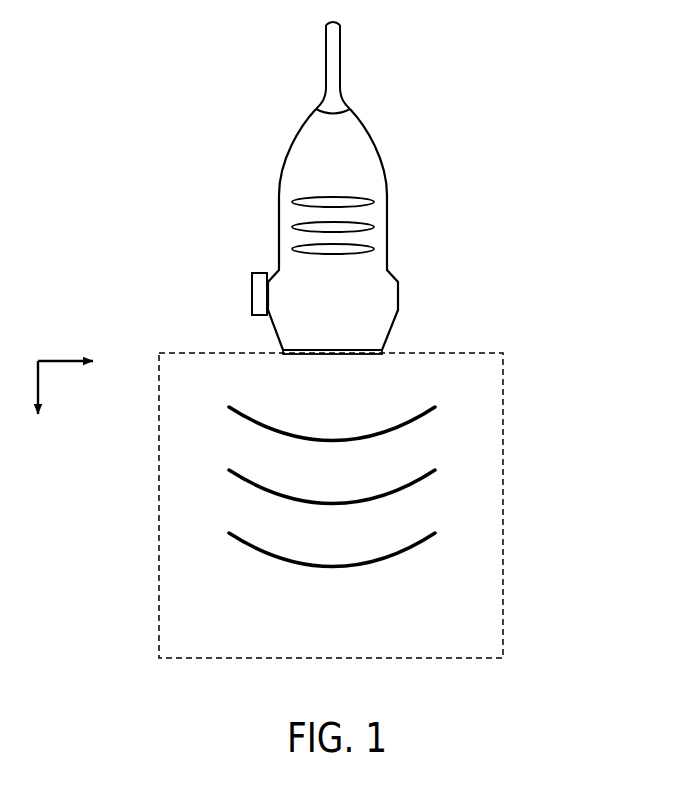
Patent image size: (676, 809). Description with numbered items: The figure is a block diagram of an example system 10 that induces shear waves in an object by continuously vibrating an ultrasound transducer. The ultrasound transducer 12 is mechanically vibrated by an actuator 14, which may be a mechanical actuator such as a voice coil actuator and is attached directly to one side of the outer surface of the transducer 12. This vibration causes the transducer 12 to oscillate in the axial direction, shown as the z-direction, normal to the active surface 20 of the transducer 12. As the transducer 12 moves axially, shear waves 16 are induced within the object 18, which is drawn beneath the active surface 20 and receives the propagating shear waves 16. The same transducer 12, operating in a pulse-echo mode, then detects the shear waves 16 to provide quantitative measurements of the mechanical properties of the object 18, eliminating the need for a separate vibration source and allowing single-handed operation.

The system 10 is at (178, 95).
The transducer 12 is at (393, 197).
The actuator 14 is at (247, 292).
The shear waves 16 is at (439, 412).
The object 18 is at (213, 642).
The active surface 20 is at (375, 358).